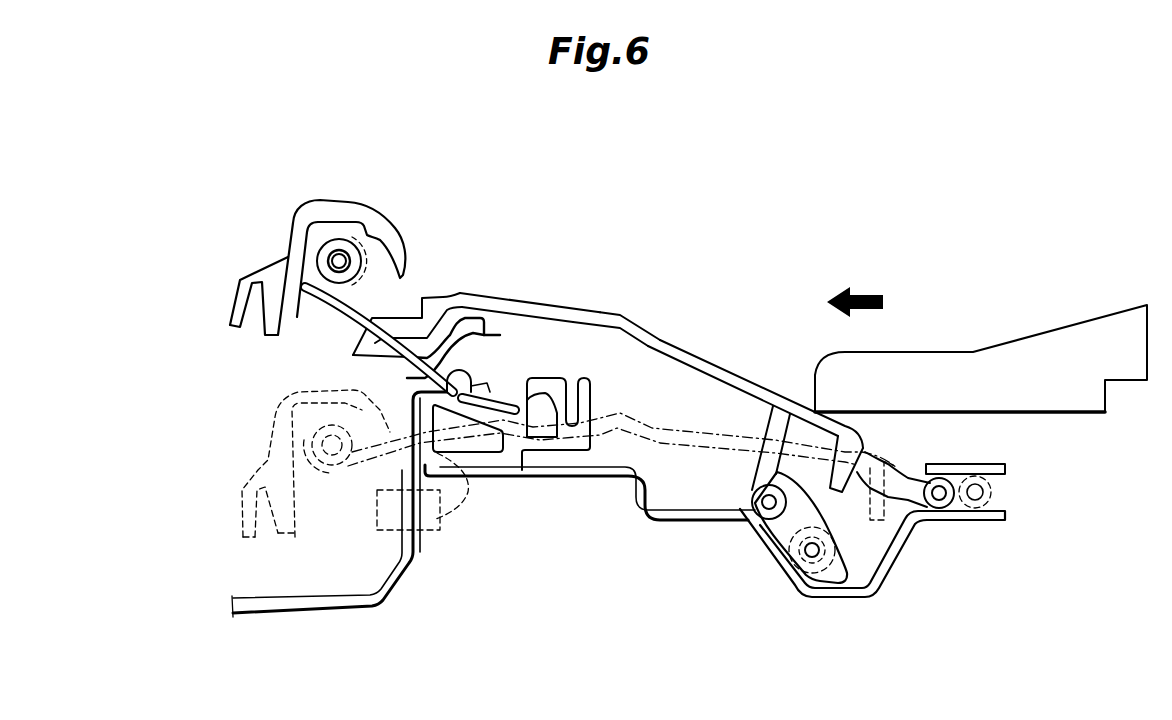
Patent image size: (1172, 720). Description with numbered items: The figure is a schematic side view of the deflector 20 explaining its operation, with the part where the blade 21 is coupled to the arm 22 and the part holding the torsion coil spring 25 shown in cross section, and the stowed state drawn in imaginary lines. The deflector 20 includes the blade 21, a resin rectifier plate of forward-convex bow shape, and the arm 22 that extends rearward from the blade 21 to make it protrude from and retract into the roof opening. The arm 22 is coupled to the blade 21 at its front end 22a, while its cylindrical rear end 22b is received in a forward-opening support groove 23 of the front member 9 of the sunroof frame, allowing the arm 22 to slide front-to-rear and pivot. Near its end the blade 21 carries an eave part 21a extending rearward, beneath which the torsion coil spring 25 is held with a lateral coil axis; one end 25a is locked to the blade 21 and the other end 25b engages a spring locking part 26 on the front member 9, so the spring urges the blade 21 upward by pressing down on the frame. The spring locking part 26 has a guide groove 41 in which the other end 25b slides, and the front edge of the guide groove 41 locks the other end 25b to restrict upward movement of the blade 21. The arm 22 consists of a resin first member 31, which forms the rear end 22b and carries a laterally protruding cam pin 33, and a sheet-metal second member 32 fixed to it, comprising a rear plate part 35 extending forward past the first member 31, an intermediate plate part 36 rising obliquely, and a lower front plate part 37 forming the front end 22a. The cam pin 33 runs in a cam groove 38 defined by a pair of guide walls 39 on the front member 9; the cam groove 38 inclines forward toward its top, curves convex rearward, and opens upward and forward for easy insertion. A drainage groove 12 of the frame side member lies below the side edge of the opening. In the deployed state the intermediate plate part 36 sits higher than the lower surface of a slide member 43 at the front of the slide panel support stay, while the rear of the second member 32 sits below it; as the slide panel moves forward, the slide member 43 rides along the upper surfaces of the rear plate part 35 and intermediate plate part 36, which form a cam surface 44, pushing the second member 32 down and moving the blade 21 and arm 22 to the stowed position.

The front member 9 is at (323, 606).
The drainage groove 12 is at (650, 512).
The deflector 20 is at (634, 398).
The blade 21 is at (431, 294).
The eave part 21a is at (366, 208).
The arm 22 is at (665, 340).
The front end 22a is at (465, 293).
The rear end 22b is at (943, 477).
The support groove 23 is at (1011, 478).
The torsion coil spring 25 is at (328, 240).
The one end 25a is at (285, 258).
The other end 25b is at (450, 393).
The spring locking part 26 is at (465, 376).
The first member 31 is at (780, 427).
The second member 32 is at (702, 359).
The cam pin 33 is at (753, 512).
The rear plate part 35 is at (718, 381).
The intermediate plate part 36 is at (642, 342).
The front plate part 37 is at (552, 396).
The cam groove 38 is at (822, 586).
The guide walls 39 is at (838, 540).
The guide groove 41 is at (517, 395).
The slide member 43 is at (1022, 352).
The cam surface 44 is at (650, 328).